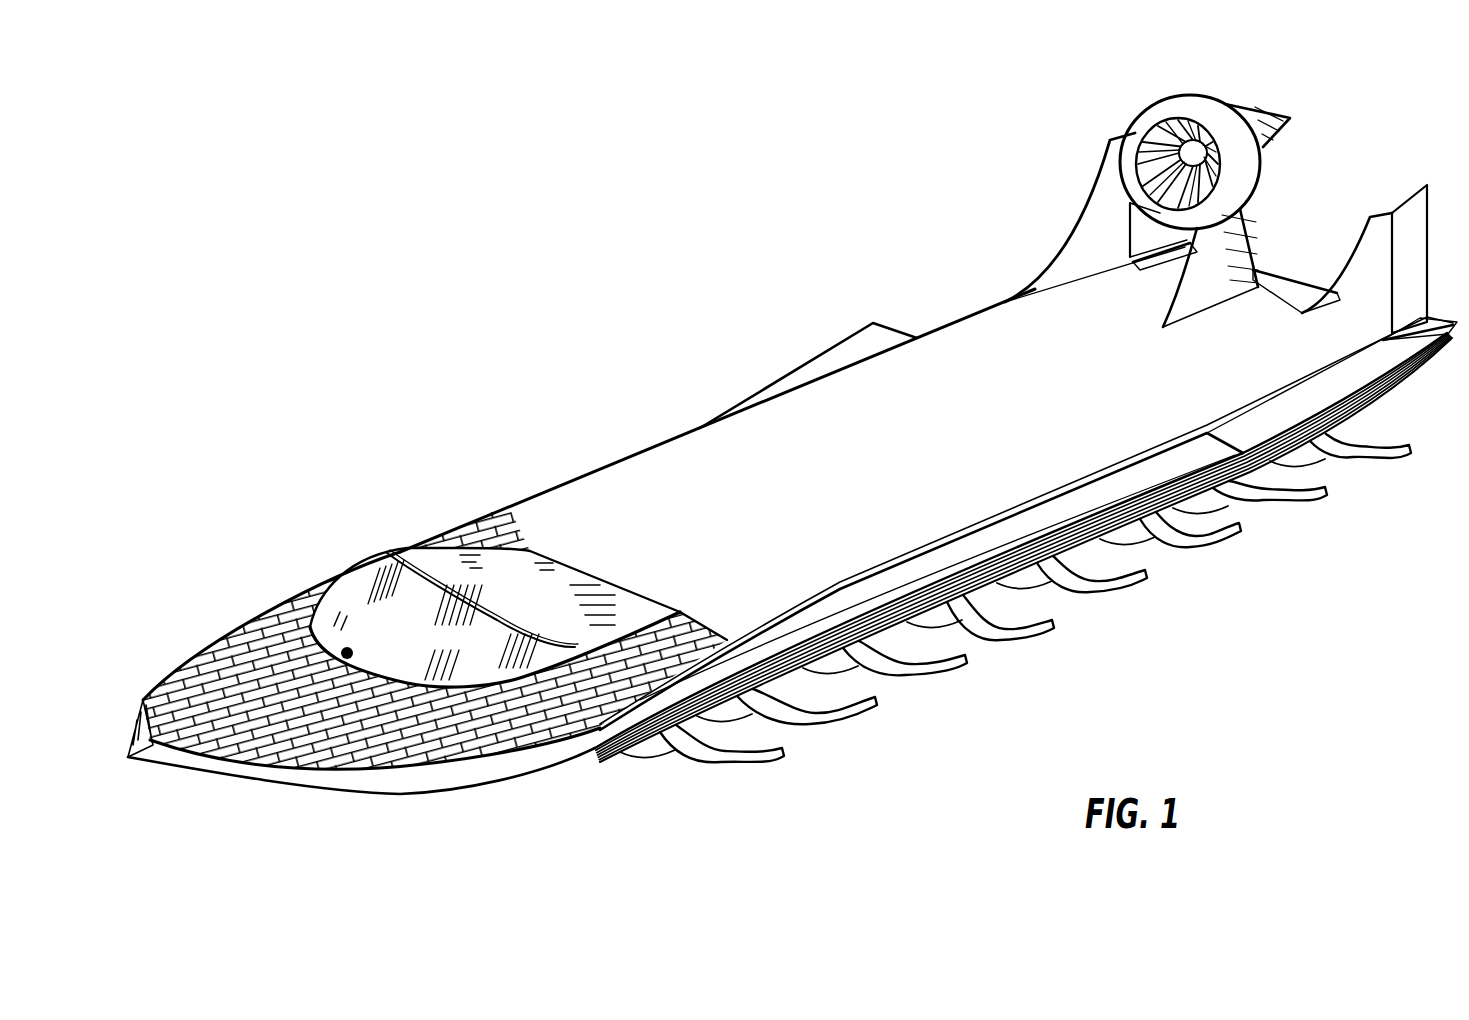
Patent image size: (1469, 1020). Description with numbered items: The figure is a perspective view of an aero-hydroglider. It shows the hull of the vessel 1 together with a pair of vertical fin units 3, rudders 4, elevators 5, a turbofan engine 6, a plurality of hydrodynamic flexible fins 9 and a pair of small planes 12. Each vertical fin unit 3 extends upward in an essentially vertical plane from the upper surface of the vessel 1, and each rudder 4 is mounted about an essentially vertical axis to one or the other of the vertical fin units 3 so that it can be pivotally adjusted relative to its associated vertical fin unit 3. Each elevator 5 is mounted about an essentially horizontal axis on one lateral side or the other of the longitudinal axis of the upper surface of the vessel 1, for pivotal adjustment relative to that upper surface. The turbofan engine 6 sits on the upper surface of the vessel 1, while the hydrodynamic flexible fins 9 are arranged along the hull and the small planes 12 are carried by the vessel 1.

The vessel 1 is at (525, 503).
The vertical fin unit 3 is at (1067, 258).
The rudder 4 is at (1132, 240).
The elevator 5 is at (1164, 263).
The turbofan engine 6 is at (1193, 98).
The hydrodynamic flexible fin 9 is at (713, 758).
The small plane 12 is at (846, 342).